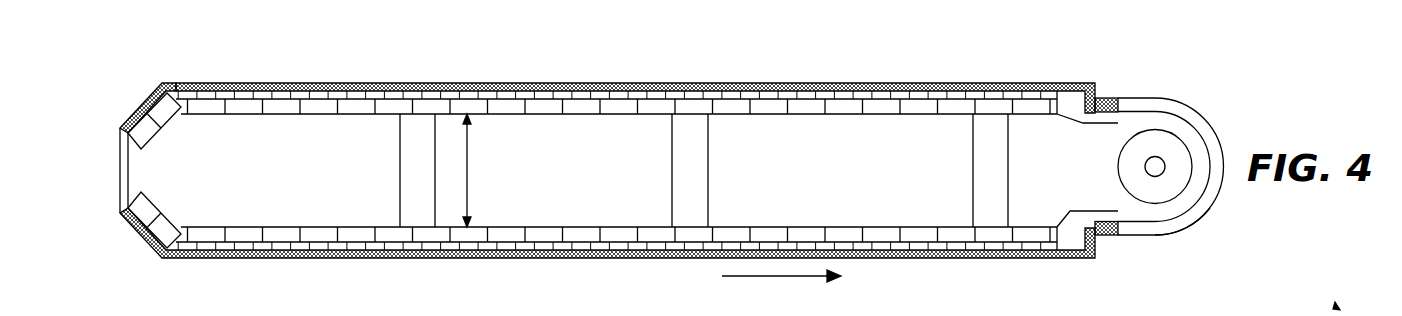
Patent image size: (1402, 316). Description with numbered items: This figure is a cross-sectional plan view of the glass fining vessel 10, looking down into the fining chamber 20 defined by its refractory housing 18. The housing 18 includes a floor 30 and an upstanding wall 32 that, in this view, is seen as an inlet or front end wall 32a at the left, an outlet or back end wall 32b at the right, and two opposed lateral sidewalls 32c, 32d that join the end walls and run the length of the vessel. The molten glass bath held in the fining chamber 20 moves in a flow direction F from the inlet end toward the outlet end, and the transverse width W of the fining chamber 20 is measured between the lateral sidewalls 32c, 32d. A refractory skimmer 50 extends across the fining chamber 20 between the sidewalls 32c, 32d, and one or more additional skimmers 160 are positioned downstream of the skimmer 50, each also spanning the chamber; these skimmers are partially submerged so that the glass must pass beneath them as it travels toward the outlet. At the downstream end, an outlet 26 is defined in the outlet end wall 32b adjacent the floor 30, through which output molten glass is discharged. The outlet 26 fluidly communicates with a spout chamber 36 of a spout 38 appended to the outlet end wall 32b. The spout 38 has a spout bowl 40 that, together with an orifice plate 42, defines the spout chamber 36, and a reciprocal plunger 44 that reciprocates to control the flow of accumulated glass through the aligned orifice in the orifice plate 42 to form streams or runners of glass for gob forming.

The glass fining vessel 10 is at (207, 32).
The housing 18 is at (129, 103).
The fining chamber 20 is at (246, 114).
The outlet 26 is at (1064, 214).
The floor 30 is at (606, 176).
The upstanding wall 32 is at (411, 76).
The inlet end wall 32a is at (117, 181).
The outlet end wall 32b is at (1103, 97).
The lateral sidewall 32c is at (547, 103).
The lateral sidewall 32d is at (497, 233).
The spout chamber 36 is at (1183, 207).
The spout 38 is at (1167, 254).
The spout bowl 40 is at (1164, 98).
The orifice plate 42 is at (1163, 140).
The reciprocal plunger 44 is at (1150, 168).
The skimmer 50 is at (386, 127).
The additional skimmer 160 is at (710, 136).
The width of the fining chamber W is at (470, 161).
The flow direction F is at (748, 278).